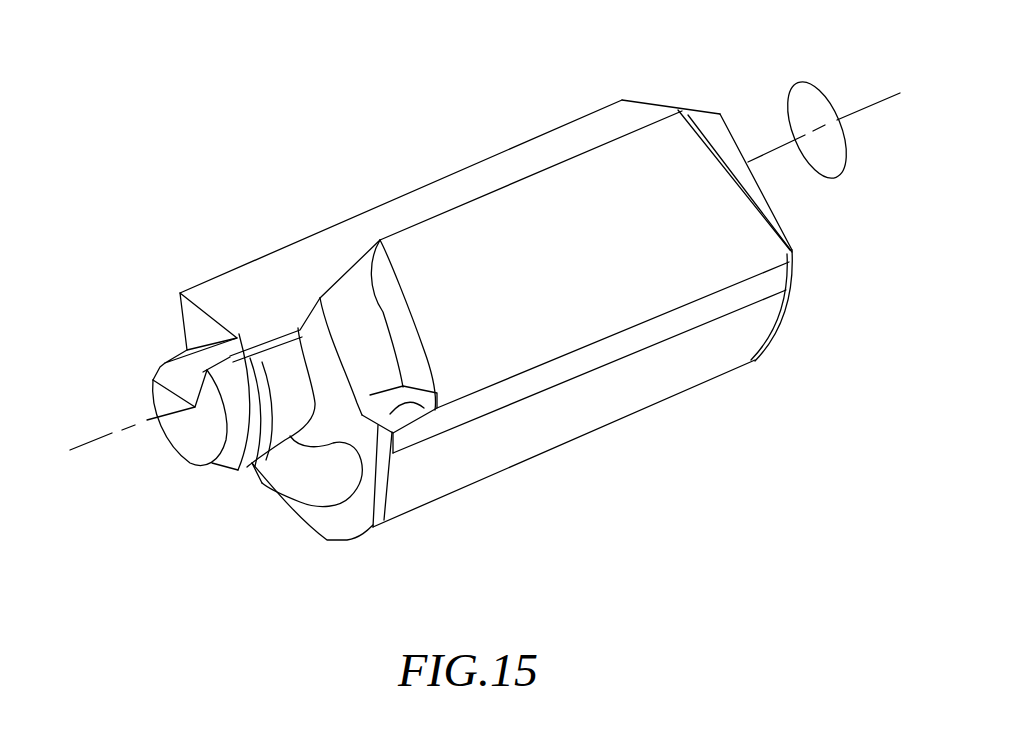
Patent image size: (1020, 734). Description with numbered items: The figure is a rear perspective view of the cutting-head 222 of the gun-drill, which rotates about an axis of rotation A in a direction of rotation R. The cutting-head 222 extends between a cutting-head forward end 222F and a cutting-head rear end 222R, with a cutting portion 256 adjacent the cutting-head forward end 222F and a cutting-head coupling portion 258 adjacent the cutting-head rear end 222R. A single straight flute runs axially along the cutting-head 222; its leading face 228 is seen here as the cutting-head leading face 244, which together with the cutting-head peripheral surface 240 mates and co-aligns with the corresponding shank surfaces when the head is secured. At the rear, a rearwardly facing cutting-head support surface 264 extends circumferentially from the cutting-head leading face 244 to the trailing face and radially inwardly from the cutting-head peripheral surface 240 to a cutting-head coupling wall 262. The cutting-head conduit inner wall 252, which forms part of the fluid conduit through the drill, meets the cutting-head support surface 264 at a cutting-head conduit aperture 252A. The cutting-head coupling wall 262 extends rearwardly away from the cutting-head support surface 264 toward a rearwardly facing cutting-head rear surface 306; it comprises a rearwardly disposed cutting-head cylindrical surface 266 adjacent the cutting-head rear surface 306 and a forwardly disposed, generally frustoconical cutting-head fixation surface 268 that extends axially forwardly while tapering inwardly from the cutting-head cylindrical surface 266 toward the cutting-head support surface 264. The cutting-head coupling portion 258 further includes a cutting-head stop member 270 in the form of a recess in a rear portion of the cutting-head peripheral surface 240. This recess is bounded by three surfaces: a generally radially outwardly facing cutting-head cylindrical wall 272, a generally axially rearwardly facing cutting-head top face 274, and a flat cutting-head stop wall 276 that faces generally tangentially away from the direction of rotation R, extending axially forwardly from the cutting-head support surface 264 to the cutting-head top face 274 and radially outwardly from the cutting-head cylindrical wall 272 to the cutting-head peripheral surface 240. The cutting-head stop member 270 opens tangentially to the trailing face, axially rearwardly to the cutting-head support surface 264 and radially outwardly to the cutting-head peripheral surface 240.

The cutting-head 222 is at (316, 41).
The cutting-head forward end 222F is at (788, 176).
The cutting-head rear end 222R is at (140, 326).
The leading face 228 is at (511, 155).
The cutting-head leading face 244 is at (475, 178).
The cutting-head peripheral surface 240 is at (600, 413).
The cutting portion 256 is at (708, 378).
The cutting-head coupling portion 258 is at (127, 373).
The cutting-head rear surface 306 is at (205, 432).
The cutting-head cylindrical surface 266 is at (298, 470).
The cutting-head fixation surface 268 is at (285, 380).
The cutting-head coupling wall 262 is at (288, 343).
The cutting-head stop member 270 is at (354, 316).
The cutting-head top face 274 is at (387, 278).
The cutting-head stop wall 276 is at (430, 415).
The cutting-head cylindrical wall 272 is at (376, 528).
The cutting-head conduit inner wall 252 is at (298, 482).
The cutting-head conduit aperture 252A is at (305, 503).
The cutting-head support surface 264 is at (350, 517).
The axis of rotation A is at (137, 423).
The direction of rotation R is at (824, 130).